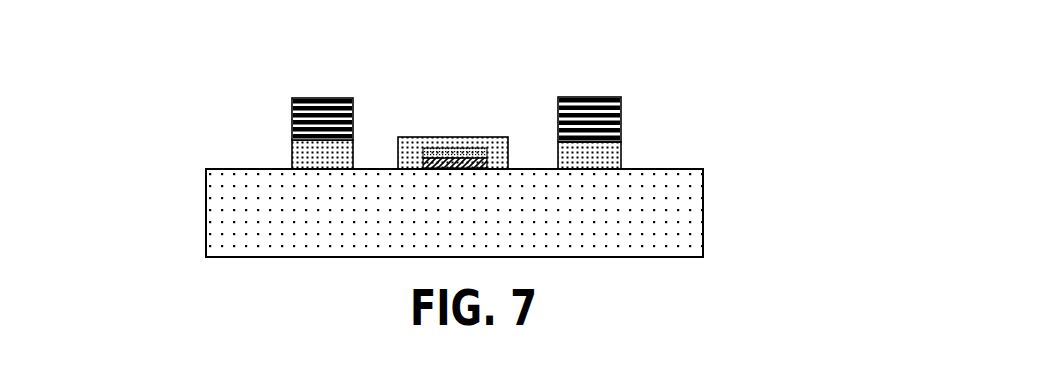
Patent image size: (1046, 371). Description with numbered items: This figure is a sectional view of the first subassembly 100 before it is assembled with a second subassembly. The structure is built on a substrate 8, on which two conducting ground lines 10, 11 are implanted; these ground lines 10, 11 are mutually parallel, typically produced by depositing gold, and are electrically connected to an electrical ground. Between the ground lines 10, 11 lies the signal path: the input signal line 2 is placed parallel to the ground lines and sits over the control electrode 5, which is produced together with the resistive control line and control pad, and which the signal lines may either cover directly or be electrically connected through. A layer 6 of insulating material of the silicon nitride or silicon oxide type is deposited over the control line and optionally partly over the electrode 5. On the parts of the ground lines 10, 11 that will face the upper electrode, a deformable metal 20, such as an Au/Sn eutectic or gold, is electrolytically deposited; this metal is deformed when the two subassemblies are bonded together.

The first subassembly 100 is at (178, 223).
The substrate 8 is at (680, 217).
The ground line 11 is at (323, 161).
The deformable metal 20 is at (620, 108).
The ground line 10 is at (603, 160).
The input signal line 2 is at (410, 150).
The layer of insulating material 6 is at (457, 148).
The control electrode 5 is at (482, 160).